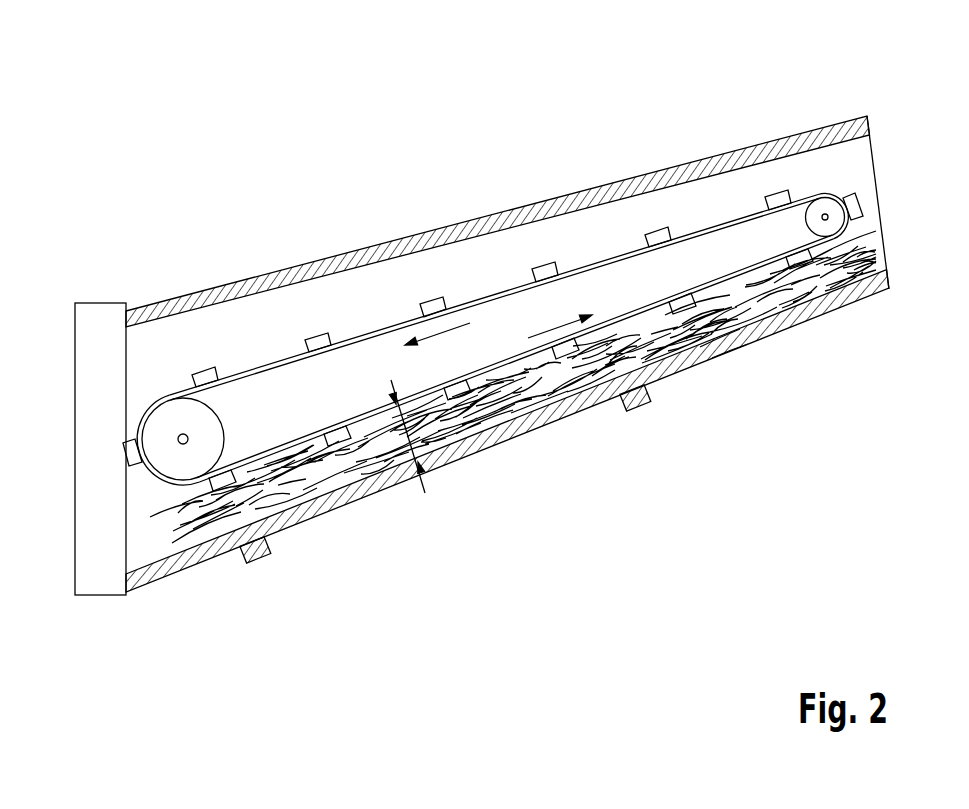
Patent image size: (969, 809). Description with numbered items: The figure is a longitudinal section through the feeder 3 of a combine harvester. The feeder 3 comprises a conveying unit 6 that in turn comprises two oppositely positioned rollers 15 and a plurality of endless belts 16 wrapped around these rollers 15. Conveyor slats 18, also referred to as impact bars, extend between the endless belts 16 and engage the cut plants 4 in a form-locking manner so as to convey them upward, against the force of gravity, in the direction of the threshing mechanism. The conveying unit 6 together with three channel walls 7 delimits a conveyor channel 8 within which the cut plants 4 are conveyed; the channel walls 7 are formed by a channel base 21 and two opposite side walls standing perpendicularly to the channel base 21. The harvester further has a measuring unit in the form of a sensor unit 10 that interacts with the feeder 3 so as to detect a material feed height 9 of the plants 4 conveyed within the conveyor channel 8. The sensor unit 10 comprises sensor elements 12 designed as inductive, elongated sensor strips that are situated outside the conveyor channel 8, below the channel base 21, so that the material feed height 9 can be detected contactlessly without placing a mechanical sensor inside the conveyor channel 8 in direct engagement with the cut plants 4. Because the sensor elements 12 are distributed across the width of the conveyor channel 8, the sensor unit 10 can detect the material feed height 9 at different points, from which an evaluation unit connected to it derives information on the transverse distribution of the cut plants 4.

The feeder 3 is at (482, 355).
The cut plants 4 is at (707, 330).
The conveying unit 6 is at (492, 311).
The channel walls 7 is at (322, 508).
The conveyor channel 8 is at (515, 417).
The material feed height 9 is at (410, 440).
The sensor unit 10 is at (250, 562).
The sensor elements 12 is at (440, 518).
The rollers 15 is at (160, 432).
The endless belts 16 is at (488, 298).
The conveyor slats 18 is at (323, 334).
The channel base 21 is at (507, 431).